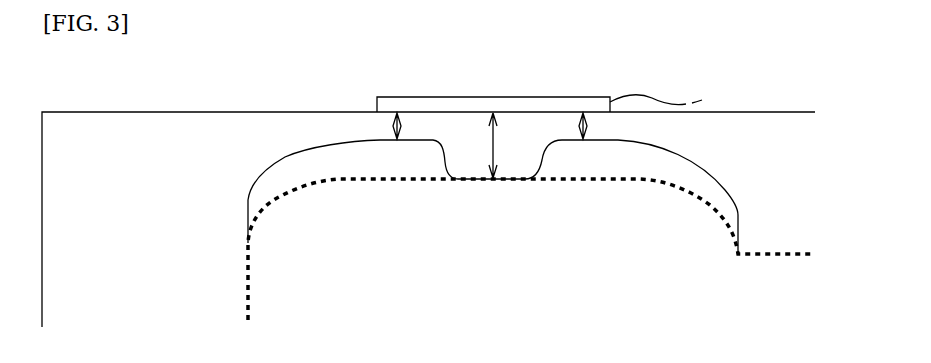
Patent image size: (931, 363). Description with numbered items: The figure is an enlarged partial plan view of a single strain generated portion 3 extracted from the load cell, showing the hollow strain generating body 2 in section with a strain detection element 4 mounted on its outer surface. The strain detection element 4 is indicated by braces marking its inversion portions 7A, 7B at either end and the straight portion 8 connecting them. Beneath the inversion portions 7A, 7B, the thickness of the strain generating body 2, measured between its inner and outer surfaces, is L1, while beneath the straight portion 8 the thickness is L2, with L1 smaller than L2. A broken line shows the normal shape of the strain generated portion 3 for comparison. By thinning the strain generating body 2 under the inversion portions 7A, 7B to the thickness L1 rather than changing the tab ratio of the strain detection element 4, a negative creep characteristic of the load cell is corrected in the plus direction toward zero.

The strain generating body 2 is at (165, 119).
The strain generated portion 3 is at (500, 220).
The strain detection element 4 is at (669, 100).
The inversion portion 7A is at (430, 85).
The inversion portion 7B is at (610, 85).
The straight portion 8 is at (555, 85).
The thickness L1 is at (488, 128).
The thickness L2 is at (476, 145).